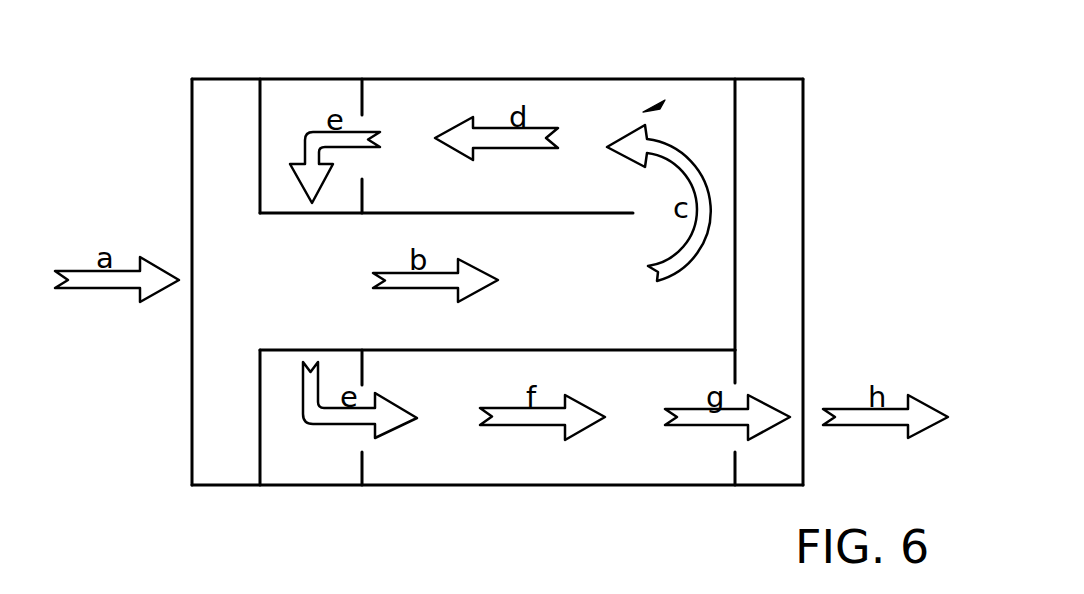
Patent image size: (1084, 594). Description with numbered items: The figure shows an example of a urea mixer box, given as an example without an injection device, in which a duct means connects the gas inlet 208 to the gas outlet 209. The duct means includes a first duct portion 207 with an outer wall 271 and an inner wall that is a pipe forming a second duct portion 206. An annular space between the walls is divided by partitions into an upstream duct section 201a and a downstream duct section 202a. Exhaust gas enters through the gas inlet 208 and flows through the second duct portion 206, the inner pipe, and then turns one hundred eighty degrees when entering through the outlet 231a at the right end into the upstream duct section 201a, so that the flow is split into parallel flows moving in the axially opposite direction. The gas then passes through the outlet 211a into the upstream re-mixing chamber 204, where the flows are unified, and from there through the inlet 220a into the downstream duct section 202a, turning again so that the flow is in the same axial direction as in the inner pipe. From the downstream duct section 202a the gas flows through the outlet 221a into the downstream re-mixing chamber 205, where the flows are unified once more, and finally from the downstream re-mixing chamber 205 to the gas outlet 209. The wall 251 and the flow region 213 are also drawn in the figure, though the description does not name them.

The upstream duct section 201a is at (463, 102).
The downstream duct section 202a is at (580, 463).
The upstream re-mixing chamber 204 is at (295, 112).
The downstream re-mixing chamber 205 is at (770, 463).
The second duct portion 206 is at (735, 320).
The first duct portion 207 is at (652, 109).
The gas inlet 208 is at (192, 130).
The gas outlet 209 is at (803, 363).
The outlet 211a is at (368, 125).
The central flow passage 213 is at (610, 312).
The inlet 220a is at (362, 437).
The outlet 221a is at (733, 437).
The outlet 231a is at (723, 207).
The upper partition plate 251 is at (573, 213).
The outer wall 271 is at (638, 79).